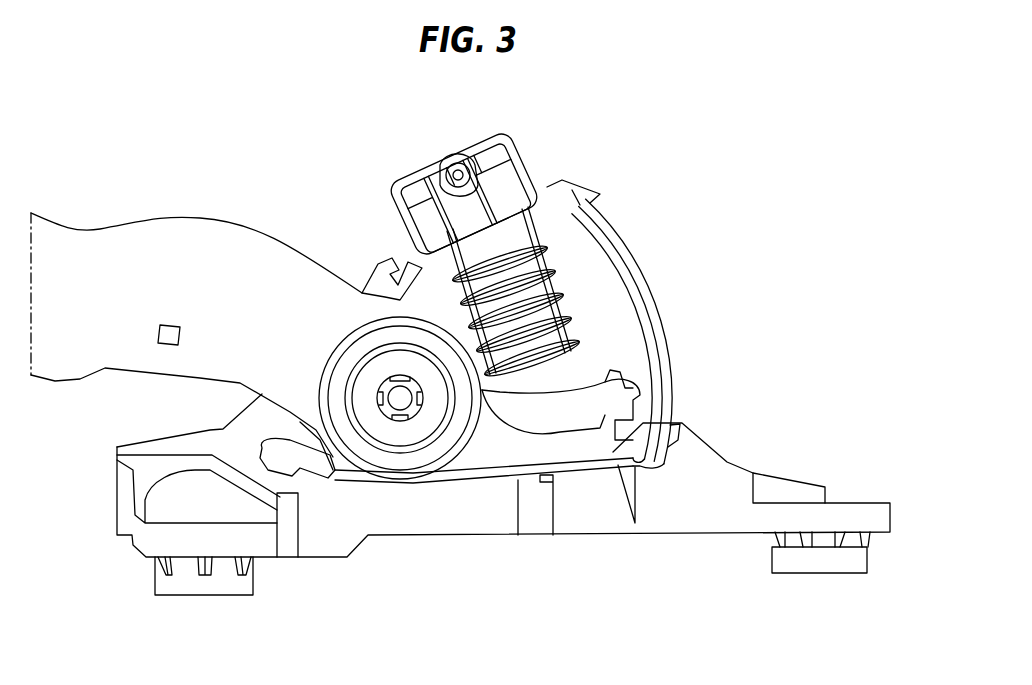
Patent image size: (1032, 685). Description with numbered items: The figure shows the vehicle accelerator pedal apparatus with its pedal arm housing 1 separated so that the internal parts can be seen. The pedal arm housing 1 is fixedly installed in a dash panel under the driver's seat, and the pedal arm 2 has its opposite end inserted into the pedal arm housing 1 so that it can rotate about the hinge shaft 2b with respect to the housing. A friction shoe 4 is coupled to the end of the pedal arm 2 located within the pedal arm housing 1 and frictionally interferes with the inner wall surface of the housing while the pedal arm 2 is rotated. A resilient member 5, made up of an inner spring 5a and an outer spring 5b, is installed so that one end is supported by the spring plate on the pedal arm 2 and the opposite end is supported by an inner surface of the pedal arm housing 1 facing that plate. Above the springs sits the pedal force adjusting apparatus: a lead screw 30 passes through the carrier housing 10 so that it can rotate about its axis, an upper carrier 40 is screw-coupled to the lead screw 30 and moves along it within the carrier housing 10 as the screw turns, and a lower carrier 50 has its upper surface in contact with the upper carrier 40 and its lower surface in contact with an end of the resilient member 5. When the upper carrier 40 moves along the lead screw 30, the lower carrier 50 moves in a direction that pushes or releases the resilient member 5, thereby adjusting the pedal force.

The pedal arm housing 1 is at (675, 340).
The pedal arm 2 is at (175, 226).
The hinge shaft 2b is at (400, 400).
The friction shoe 4 is at (633, 388).
The resilient member 5 is at (578, 294).
The inner spring 5a is at (552, 284).
The outer spring 5b is at (545, 262).
The carrier housing 10 is at (503, 133).
The lead screw 30 is at (440, 165).
The upper carrier 40 is at (425, 178).
The lower carrier 50 is at (520, 185).